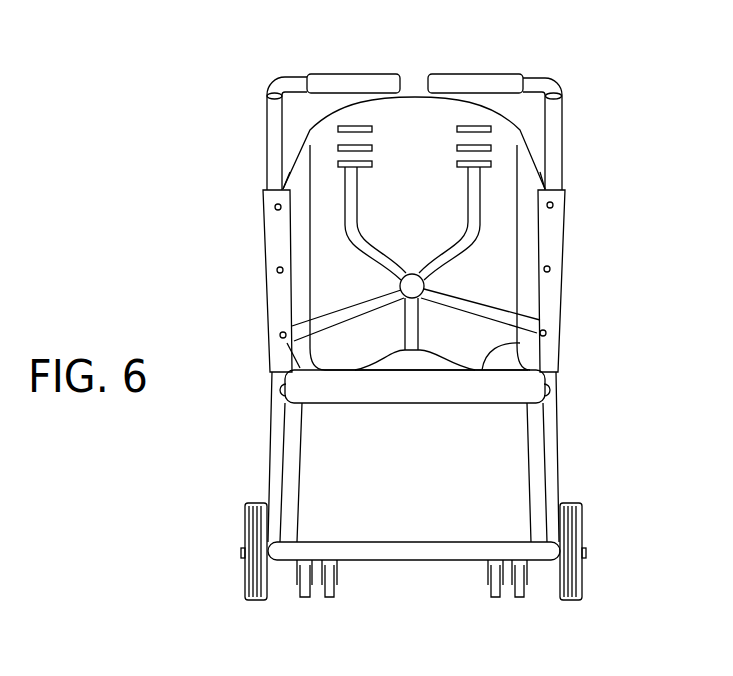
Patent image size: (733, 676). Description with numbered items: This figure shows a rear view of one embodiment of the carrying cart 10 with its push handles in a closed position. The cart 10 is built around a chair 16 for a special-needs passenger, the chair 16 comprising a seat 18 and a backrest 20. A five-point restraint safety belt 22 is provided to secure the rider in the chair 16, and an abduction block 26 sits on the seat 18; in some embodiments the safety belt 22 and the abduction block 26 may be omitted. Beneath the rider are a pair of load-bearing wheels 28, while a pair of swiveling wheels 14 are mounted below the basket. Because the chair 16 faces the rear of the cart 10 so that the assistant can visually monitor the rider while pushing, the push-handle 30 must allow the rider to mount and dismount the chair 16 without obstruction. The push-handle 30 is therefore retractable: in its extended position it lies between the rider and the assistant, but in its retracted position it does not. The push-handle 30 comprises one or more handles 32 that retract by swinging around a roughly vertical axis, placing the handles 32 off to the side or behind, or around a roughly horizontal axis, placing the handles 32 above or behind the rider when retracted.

The carrying cart 10 is at (657, 246).
The swiveling wheels 14 is at (305, 596).
The chair 16 is at (303, 137).
The seat 18 is at (508, 340).
The backrest 20 is at (430, 150).
The five-point restraint safety belt 22 is at (359, 217).
The abduction block 26 is at (395, 350).
The load-bearing wheels 28 is at (245, 526).
The push-handle 30 is at (280, 76).
The handles 32 is at (457, 76).